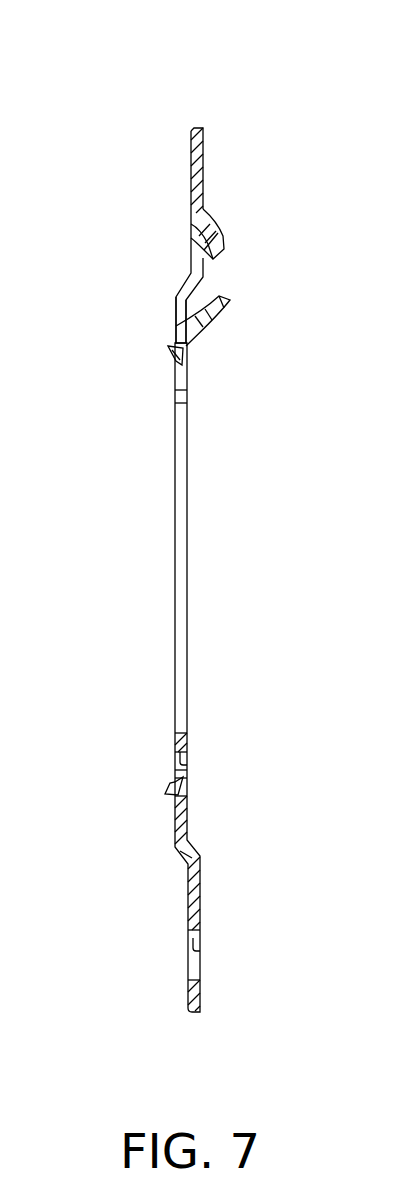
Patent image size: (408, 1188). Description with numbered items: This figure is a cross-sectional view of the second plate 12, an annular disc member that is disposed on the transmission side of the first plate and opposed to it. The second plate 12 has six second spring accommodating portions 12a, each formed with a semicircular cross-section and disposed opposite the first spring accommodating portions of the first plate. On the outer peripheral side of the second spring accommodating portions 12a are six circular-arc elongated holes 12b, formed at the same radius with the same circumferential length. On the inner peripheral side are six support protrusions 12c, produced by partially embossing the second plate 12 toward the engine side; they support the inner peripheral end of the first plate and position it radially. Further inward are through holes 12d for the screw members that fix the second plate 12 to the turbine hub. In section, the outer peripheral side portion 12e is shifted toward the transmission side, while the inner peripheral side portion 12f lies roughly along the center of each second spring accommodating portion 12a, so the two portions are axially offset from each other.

The second plate 12 is at (245, 107).
The second spring accommodating portion 12a is at (195, 236).
The circular-arc elongated hole 12b is at (202, 950).
The support protrusion 12c is at (167, 786).
The through hole 12d is at (183, 758).
The outer peripheral side portion 12e is at (196, 250).
The inner peripheral side portion 12f is at (178, 309).